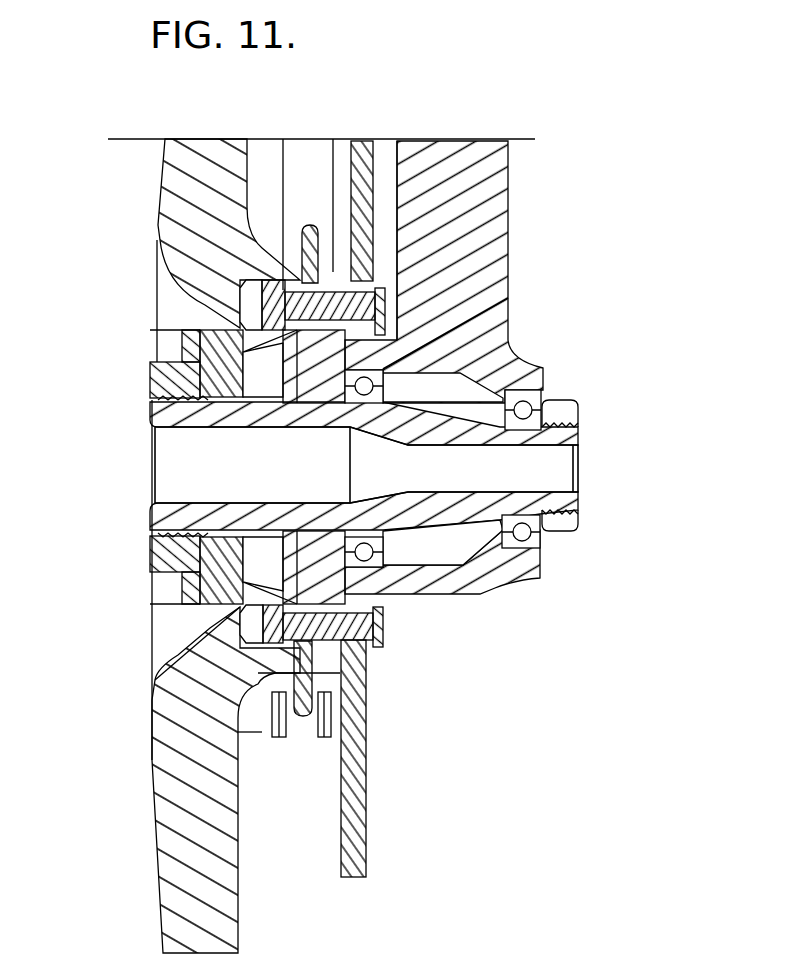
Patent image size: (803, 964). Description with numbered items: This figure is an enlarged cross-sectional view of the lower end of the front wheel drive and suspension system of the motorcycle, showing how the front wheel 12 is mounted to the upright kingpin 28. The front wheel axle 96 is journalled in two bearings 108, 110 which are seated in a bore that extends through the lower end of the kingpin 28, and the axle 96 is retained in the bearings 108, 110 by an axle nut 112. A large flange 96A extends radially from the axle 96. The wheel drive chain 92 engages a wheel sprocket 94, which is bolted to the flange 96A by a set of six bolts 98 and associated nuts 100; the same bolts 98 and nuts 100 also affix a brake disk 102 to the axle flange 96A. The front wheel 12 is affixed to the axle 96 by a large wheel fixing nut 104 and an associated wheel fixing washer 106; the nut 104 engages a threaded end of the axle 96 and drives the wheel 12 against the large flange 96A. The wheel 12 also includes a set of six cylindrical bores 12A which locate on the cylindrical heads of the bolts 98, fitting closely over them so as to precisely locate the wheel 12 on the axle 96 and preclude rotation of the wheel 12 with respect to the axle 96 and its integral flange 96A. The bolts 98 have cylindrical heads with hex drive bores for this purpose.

The front wheel 12 is at (140, 832).
The cylindrical bores 12A is at (162, 657).
The kingpin 28 is at (528, 227).
The wheel drive chain 92 is at (272, 734).
The wheel sprocket 94 is at (285, 672).
The front wheel axle 96 is at (150, 408).
The large flange 96A is at (317, 581).
The bolts 98 is at (384, 628).
The nuts 100 is at (384, 642).
The brake disk 102 is at (368, 760).
The wheel fixing nut 104 is at (157, 547).
The wheel fixing washer 106 is at (197, 588).
The bearing 108 is at (505, 316).
The bearing 110 is at (540, 396).
The axle nut 112 is at (580, 522).